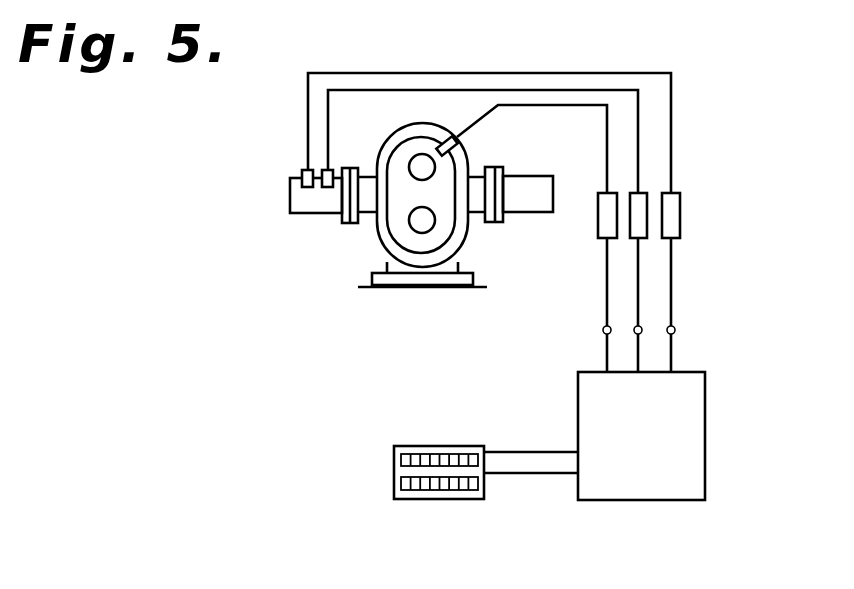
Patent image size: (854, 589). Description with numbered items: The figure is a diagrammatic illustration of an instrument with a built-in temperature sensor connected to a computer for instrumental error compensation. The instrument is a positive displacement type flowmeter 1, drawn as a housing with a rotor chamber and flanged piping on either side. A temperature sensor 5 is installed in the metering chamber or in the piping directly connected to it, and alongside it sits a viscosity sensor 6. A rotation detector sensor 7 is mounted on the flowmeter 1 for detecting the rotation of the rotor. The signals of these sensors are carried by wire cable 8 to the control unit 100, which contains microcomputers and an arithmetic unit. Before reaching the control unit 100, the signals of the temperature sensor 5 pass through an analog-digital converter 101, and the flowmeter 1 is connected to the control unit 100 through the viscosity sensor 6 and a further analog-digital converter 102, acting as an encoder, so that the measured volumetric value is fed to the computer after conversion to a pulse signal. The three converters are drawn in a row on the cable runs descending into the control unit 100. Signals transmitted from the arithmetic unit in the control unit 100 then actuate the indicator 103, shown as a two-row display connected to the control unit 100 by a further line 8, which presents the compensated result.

The flowmeter 1 is at (380, 237).
The temperature sensor 5 is at (331, 168).
The viscosity sensor 6 is at (302, 170).
The rotation detector sensor 7 is at (462, 150).
The wire cable 8 is at (405, 73).
The control unit 100 is at (705, 430).
The analog-digital converter 101 is at (647, 203).
The analog-digital converter 102 is at (680, 212).
The indicator 103 is at (430, 500).